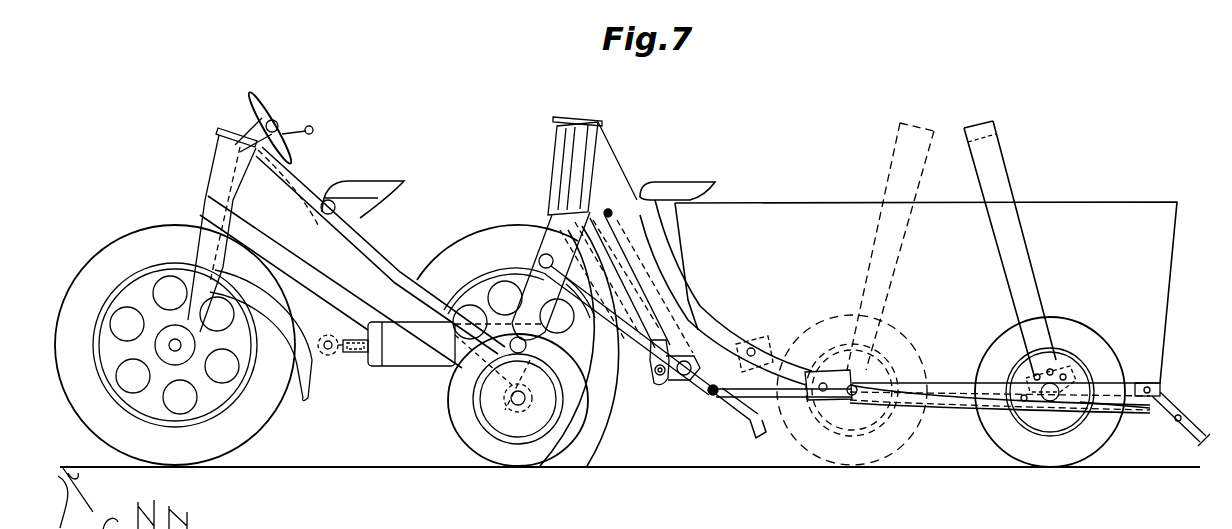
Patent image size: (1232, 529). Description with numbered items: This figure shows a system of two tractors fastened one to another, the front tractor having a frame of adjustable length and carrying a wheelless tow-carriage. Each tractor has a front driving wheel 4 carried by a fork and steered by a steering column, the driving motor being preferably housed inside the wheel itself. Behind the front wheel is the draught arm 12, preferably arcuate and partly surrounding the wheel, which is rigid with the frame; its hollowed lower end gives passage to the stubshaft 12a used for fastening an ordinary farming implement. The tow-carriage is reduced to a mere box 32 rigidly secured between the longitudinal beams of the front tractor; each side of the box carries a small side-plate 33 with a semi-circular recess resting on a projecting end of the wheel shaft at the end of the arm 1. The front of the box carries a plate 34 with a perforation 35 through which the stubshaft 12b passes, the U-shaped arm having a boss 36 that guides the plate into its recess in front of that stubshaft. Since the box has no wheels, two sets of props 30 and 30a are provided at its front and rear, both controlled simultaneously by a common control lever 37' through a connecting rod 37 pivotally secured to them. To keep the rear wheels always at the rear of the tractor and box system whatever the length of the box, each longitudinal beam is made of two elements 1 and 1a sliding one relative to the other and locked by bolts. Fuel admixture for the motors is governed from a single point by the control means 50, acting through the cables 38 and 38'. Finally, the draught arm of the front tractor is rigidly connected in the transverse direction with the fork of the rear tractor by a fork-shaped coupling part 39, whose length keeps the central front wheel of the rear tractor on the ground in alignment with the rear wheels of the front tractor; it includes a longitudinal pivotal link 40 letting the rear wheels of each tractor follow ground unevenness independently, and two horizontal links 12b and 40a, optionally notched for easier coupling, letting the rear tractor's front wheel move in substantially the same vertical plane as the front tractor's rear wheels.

The arm 1 is at (638, 257).
The element 1a is at (943, 412).
The driving wheel 4 is at (113, 250).
The draught arm 12 is at (306, 402).
The stubshaft 12a is at (692, 313).
The stubshaft 12b is at (350, 318).
The props 30 is at (740, 408).
The props 30a is at (1160, 402).
The box 32 is at (1069, 208).
The side-plate 33 is at (1063, 367).
The plate 34 is at (697, 353).
The perforation 35 is at (656, 385).
The boss 36 is at (605, 425).
The connecting rod 37 is at (1122, 425).
The control lever 37' is at (659, 184).
The cable 38 is at (236, 227).
The cable 38' is at (380, 250).
The coupling part 39 is at (400, 358).
The pivotal link 40 is at (368, 360).
The horizontal link 40a is at (521, 333).
The control means 50 is at (314, 130).